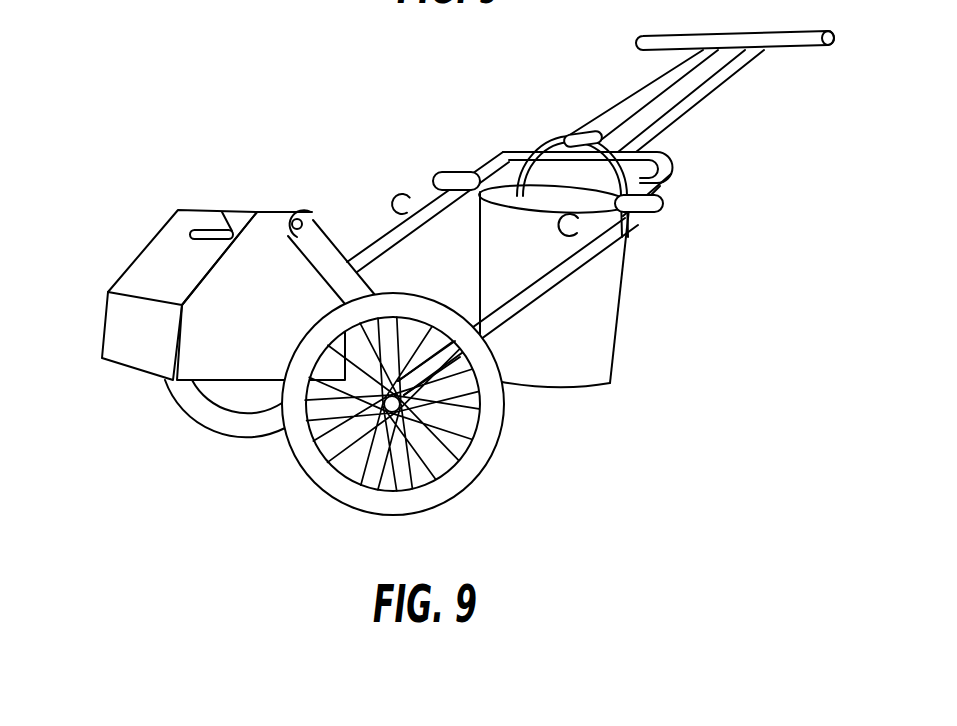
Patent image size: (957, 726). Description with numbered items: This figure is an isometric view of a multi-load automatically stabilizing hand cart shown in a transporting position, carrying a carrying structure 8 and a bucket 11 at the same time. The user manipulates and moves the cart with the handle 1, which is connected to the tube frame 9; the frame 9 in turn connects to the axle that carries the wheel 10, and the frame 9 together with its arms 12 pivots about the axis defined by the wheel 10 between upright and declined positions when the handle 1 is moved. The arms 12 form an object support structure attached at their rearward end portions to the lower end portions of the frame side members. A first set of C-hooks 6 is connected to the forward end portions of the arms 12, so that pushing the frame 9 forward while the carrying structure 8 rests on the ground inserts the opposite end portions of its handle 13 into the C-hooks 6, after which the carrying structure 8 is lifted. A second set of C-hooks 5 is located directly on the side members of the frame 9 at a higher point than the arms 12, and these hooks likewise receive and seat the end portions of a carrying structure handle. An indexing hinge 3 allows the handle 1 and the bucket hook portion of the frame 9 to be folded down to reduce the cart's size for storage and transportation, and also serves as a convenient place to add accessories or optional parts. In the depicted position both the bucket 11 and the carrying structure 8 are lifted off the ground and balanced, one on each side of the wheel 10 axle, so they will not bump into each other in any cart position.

The handle 1 is at (814, 33).
The indexing hinge 3 is at (452, 172).
The second C-hooks 5 is at (396, 198).
The first C-hooks 6 is at (306, 212).
The carrying structure 8 is at (118, 335).
The tube frame 9 is at (664, 166).
The wheels 10 is at (485, 432).
The bucket 11 is at (613, 290).
The arms 12 is at (322, 246).
The handle 13 is at (215, 238).